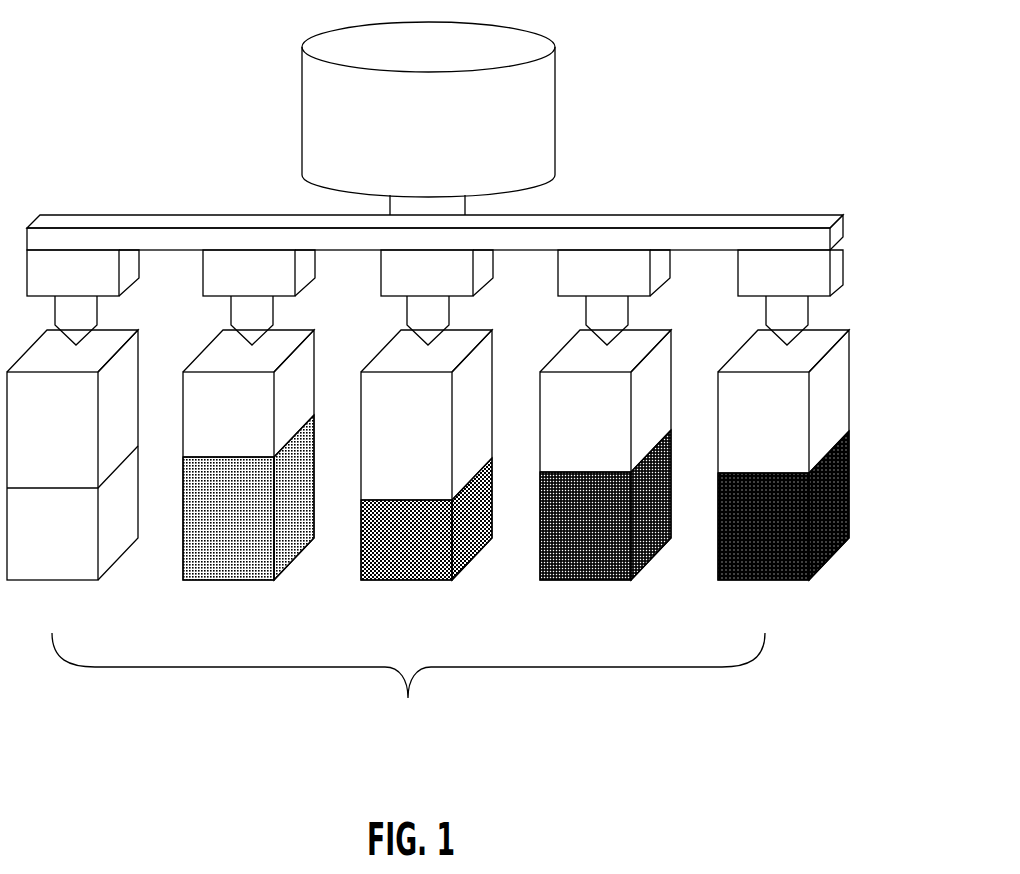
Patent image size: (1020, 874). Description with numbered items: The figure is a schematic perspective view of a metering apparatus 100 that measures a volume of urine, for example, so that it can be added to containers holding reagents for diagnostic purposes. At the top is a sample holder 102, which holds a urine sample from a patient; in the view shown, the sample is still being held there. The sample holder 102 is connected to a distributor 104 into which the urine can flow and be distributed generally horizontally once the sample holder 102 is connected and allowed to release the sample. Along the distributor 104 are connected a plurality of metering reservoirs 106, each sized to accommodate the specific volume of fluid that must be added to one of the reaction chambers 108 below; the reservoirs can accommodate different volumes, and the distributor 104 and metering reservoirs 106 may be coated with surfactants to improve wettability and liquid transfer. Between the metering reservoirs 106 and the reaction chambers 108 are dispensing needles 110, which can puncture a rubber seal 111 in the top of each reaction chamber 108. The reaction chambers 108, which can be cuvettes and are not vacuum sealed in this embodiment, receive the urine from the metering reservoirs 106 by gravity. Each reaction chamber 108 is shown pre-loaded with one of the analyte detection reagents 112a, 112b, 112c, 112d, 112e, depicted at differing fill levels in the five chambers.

The metering apparatus 100 is at (726, 89).
The sample holder 102 is at (556, 122).
The distributor 104 is at (818, 222).
The metering reservoirs 106 is at (838, 265).
The reaction chambers 108 is at (408, 685).
The dispensing needles 110 is at (798, 340).
The rubber seal 111 is at (466, 338).
The analyte detection reagent 112a is at (772, 582).
The analyte detection reagent 112b is at (583, 555).
The analyte detection reagent 112c is at (400, 555).
The analyte detection reagent 112d is at (231, 555).
The analyte detection reagent 112e is at (55, 555).